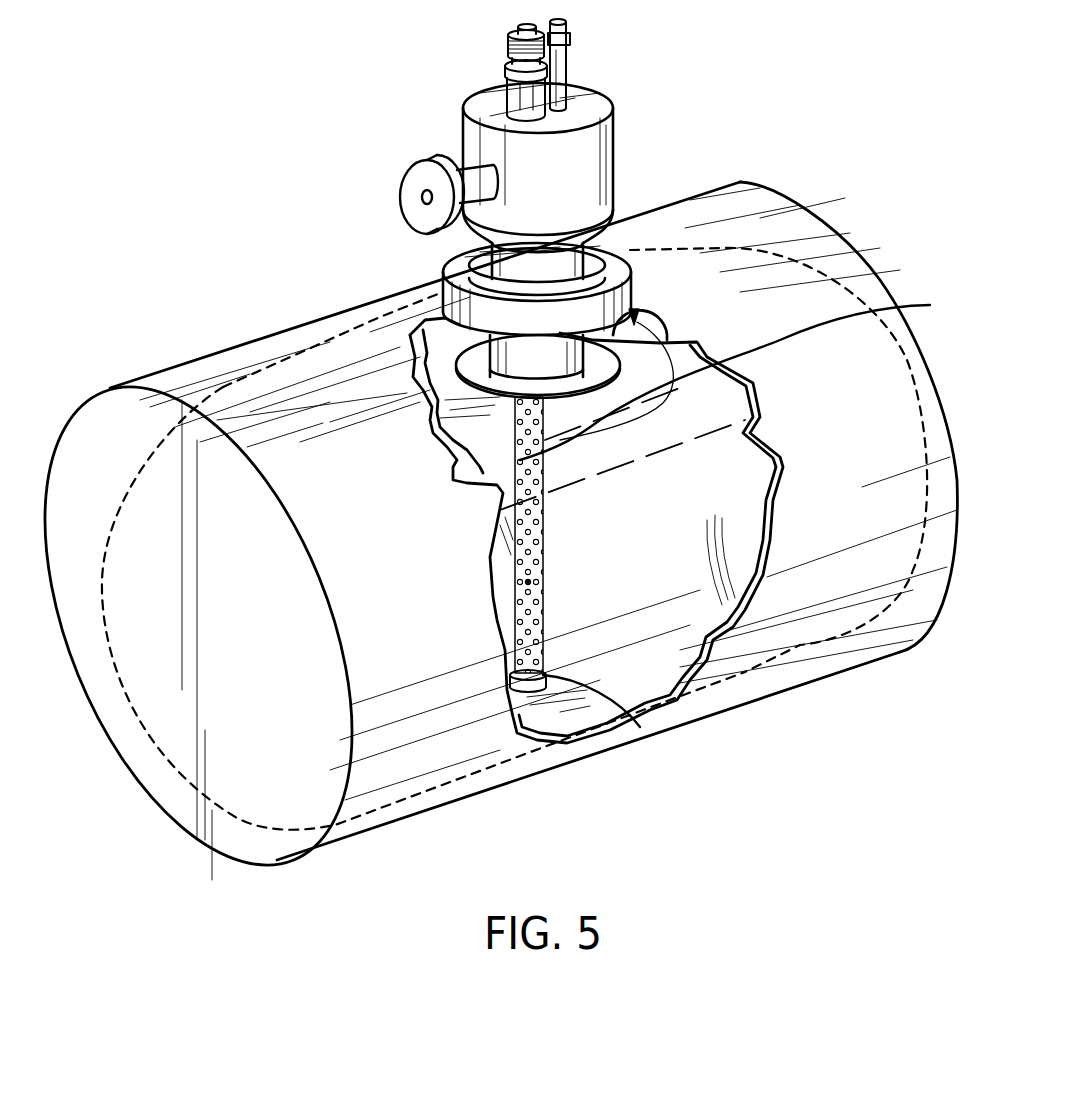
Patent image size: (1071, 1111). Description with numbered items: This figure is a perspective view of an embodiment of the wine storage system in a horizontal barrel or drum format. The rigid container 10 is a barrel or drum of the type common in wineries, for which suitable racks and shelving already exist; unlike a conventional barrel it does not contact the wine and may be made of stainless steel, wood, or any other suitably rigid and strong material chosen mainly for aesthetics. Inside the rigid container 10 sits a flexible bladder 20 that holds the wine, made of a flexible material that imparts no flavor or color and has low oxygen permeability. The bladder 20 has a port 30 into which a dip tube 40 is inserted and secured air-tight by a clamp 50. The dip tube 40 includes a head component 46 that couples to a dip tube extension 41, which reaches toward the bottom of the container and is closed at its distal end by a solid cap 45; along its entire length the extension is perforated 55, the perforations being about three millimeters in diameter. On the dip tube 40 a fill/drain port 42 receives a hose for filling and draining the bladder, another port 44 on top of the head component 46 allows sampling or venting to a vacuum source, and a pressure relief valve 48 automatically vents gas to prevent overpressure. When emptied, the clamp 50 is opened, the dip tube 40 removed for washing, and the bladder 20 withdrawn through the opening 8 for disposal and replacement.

The opening 8 is at (640, 322).
The rigid container 10 is at (883, 285).
The bladder 20 is at (483, 473).
The port 30 is at (500, 357).
The dip tube 40 is at (730, 396).
The dip tube extension 41 is at (520, 660).
The fill/drain port 42 is at (400, 212).
The port 44 is at (507, 38).
The solid cap 45 is at (547, 590).
The head component 46 is at (614, 116).
The pressure relief valve 48 is at (570, 50).
The clamp 50 is at (636, 303).
The perforations 55 is at (528, 582).